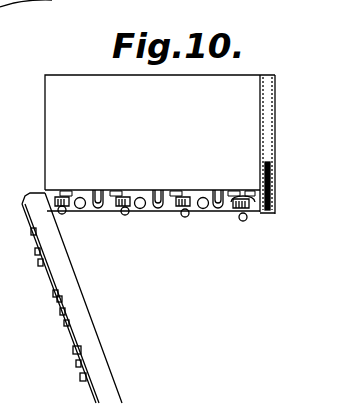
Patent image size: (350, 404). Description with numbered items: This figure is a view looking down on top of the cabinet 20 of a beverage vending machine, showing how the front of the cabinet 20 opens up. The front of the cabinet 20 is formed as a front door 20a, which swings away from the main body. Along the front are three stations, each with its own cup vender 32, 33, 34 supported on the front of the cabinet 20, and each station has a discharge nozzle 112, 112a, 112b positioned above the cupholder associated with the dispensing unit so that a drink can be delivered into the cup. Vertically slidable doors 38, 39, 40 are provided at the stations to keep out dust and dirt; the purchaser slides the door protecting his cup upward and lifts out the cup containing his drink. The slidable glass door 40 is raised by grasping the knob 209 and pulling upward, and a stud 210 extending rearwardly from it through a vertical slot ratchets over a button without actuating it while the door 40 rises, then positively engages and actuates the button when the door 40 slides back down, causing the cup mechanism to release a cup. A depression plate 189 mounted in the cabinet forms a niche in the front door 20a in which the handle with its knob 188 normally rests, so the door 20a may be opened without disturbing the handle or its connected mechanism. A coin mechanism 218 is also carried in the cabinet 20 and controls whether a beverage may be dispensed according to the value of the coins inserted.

The cabinet 20 is at (87, 80).
The front door 20a is at (113, 388).
The coin mechanism 218 is at (266, 181).
The depression plate 189 is at (255, 213).
The knob 188 is at (247, 222).
The discharge nozzle 112 is at (220, 191).
The discharge nozzle 112a is at (159, 191).
The discharge nozzle 112b is at (100, 191).
The cup vender 32 is at (82, 210).
The cup vender 33 is at (146, 210).
The cup vender 34 is at (200, 212).
The vertically slidable door 38 is at (38, 252).
The vertically slidable door 39 is at (60, 316).
The slidable glass door 40 is at (81, 376).
The knob 209 is at (76, 366).
The stud 210 is at (82, 349).